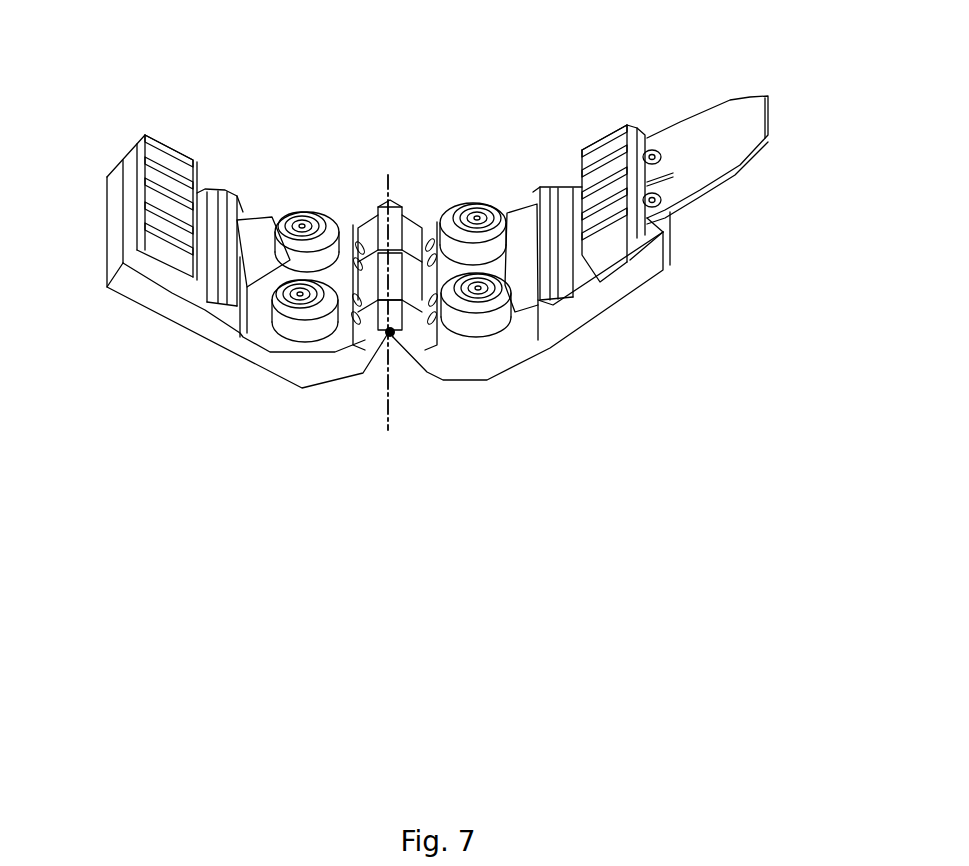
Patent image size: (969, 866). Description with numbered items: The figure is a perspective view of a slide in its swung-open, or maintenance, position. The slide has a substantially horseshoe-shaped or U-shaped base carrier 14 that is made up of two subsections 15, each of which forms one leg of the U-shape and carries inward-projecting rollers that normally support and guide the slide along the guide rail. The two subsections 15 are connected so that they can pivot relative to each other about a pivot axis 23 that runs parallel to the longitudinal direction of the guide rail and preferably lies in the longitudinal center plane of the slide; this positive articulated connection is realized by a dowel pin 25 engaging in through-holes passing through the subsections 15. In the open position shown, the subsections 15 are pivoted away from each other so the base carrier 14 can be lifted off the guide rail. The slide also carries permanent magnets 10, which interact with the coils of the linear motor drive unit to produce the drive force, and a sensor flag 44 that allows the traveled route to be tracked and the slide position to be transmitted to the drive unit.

The permanent magnet 10 is at (168, 158).
The base carrier 14 is at (268, 118).
The subsection 15 is at (213, 322).
The pivot axis 23 is at (390, 407).
The dowel pin 25 is at (388, 334).
The sensor flag 44 is at (703, 178).